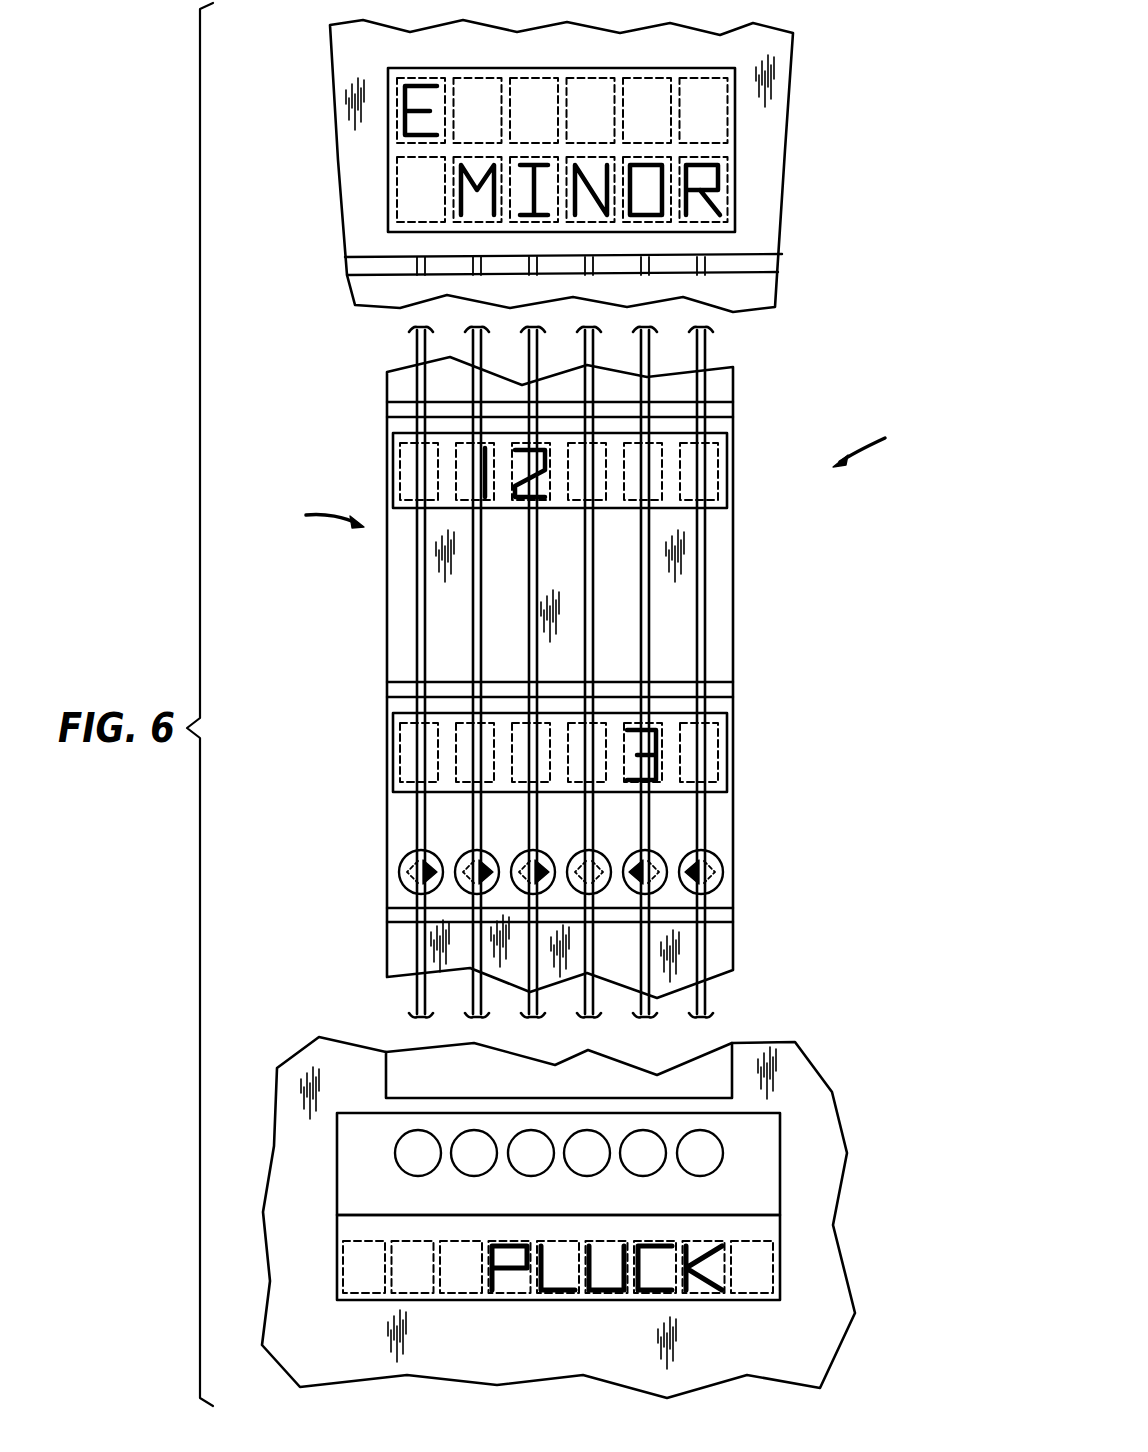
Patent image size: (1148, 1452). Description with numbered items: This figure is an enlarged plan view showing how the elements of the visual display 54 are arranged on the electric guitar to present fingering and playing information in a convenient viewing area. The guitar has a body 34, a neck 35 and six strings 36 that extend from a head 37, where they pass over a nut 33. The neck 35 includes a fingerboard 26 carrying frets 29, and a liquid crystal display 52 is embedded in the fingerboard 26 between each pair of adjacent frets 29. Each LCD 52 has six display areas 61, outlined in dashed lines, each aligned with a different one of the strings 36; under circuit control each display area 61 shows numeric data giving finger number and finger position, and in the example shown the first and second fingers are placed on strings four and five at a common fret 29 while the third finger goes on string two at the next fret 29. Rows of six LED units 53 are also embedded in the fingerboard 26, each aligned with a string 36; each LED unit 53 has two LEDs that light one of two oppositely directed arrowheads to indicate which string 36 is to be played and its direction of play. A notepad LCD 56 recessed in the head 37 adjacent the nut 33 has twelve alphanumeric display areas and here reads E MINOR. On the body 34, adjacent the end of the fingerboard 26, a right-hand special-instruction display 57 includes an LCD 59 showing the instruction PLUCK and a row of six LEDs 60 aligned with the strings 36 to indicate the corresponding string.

The fingerboard 26 is at (720, 565).
The frets 29 is at (720, 415).
The nut 33 is at (762, 273).
The body 34 is at (822, 1112).
The neck 35 is at (546, 612).
The strings 36 is at (412, 647).
The head 37 is at (785, 65).
The liquid crystal displays 52 is at (728, 473).
The light emitting diode units 53 is at (460, 857).
The visual display 54 is at (641, 677).
The notepad LCD 56 is at (735, 165).
The special-instruction display 57 is at (581, 1164).
The LCD 59 is at (770, 1230).
The LEDs 60 is at (525, 1170).
The display areas 61 is at (488, 508).